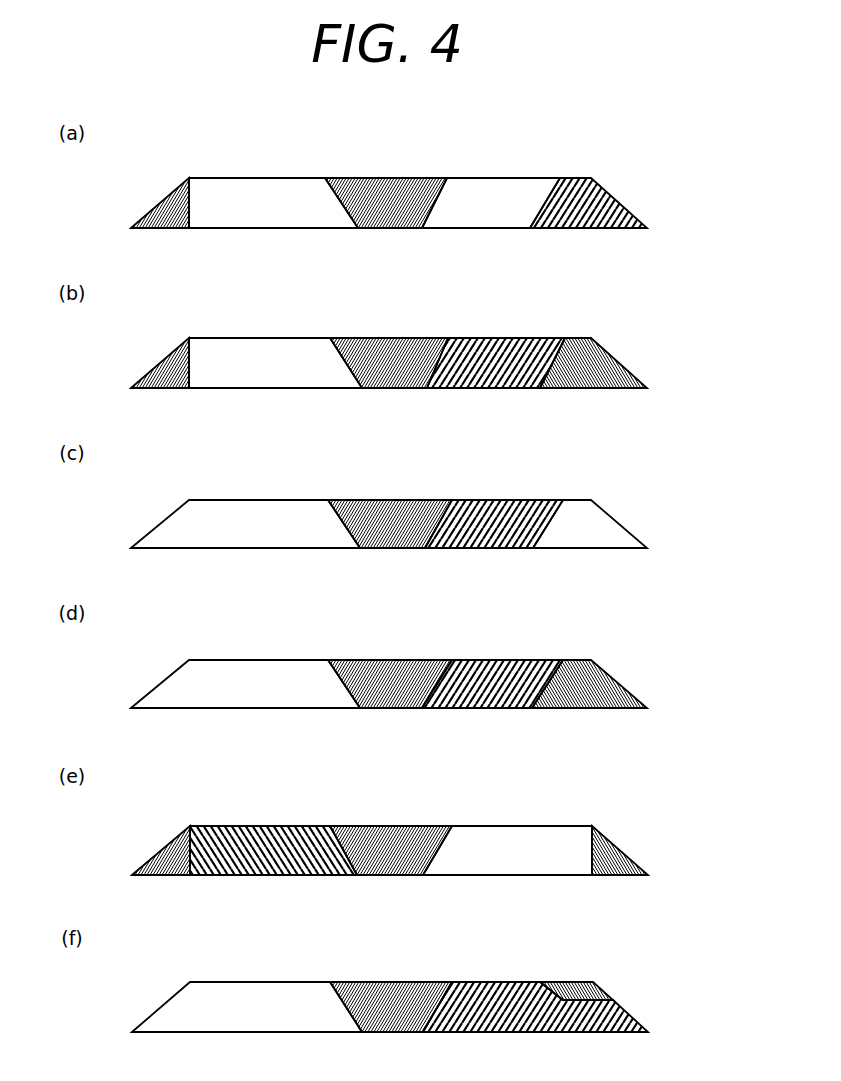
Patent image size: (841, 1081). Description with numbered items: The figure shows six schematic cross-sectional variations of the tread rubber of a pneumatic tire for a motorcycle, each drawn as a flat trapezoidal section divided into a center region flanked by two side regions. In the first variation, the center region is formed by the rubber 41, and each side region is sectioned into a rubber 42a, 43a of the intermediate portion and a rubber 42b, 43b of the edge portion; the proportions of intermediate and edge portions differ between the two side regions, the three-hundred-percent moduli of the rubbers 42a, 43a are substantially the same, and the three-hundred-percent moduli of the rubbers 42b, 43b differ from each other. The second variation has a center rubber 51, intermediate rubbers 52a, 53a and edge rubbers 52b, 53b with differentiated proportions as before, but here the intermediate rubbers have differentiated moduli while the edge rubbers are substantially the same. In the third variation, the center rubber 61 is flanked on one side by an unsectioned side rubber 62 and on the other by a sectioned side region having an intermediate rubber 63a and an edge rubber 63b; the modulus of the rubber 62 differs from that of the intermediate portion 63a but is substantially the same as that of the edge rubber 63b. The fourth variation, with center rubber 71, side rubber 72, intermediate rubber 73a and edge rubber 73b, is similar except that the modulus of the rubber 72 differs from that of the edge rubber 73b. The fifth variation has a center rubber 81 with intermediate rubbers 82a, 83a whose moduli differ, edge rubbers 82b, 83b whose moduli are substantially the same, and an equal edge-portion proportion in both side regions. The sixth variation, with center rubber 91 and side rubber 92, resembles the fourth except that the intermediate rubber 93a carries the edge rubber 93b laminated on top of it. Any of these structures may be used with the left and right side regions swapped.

The rubber constituting center region 41 is at (392, 180).
The rubber of intermediate portion 42a is at (257, 192).
The rubber of edge portion 42b is at (165, 193).
The rubber of intermediate portion 43a is at (490, 195).
The rubber of edge portion 43b is at (607, 197).
The rubber constituting center region 51 is at (392, 340).
The rubber of intermediate portion 52a is at (257, 352).
The rubber of edge portion 52b is at (165, 355).
The rubber of intermediate portion 53a is at (498, 352).
The rubber of edge portion 53b is at (607, 360).
The rubber constituting center region 61 is at (393, 502).
The rubber constituting side region 62 is at (260, 518).
The rubber of intermediate portion 63a is at (503, 517).
The rubber of edge portion 63b is at (600, 527).
The rubber constituting center region 71 is at (390, 662).
The rubber constituting side region 72 is at (255, 672).
The rubber of intermediate portion 73a is at (500, 673).
The rubber of edge portion 73b is at (607, 685).
The rubber constituting center region 81 is at (393, 833).
The rubber of intermediate portion 82a is at (262, 835).
The rubber of edge portion 82b is at (172, 842).
The rubber of intermediate portion 83a is at (497, 843).
The rubber of edge portion 83b is at (613, 842).
The rubber constituting center region 91 is at (400, 982).
The rubber constituting side region 92 is at (260, 998).
The rubber of intermediate portion 93a is at (507, 982).
The rubber of edge portion 93b is at (595, 982).